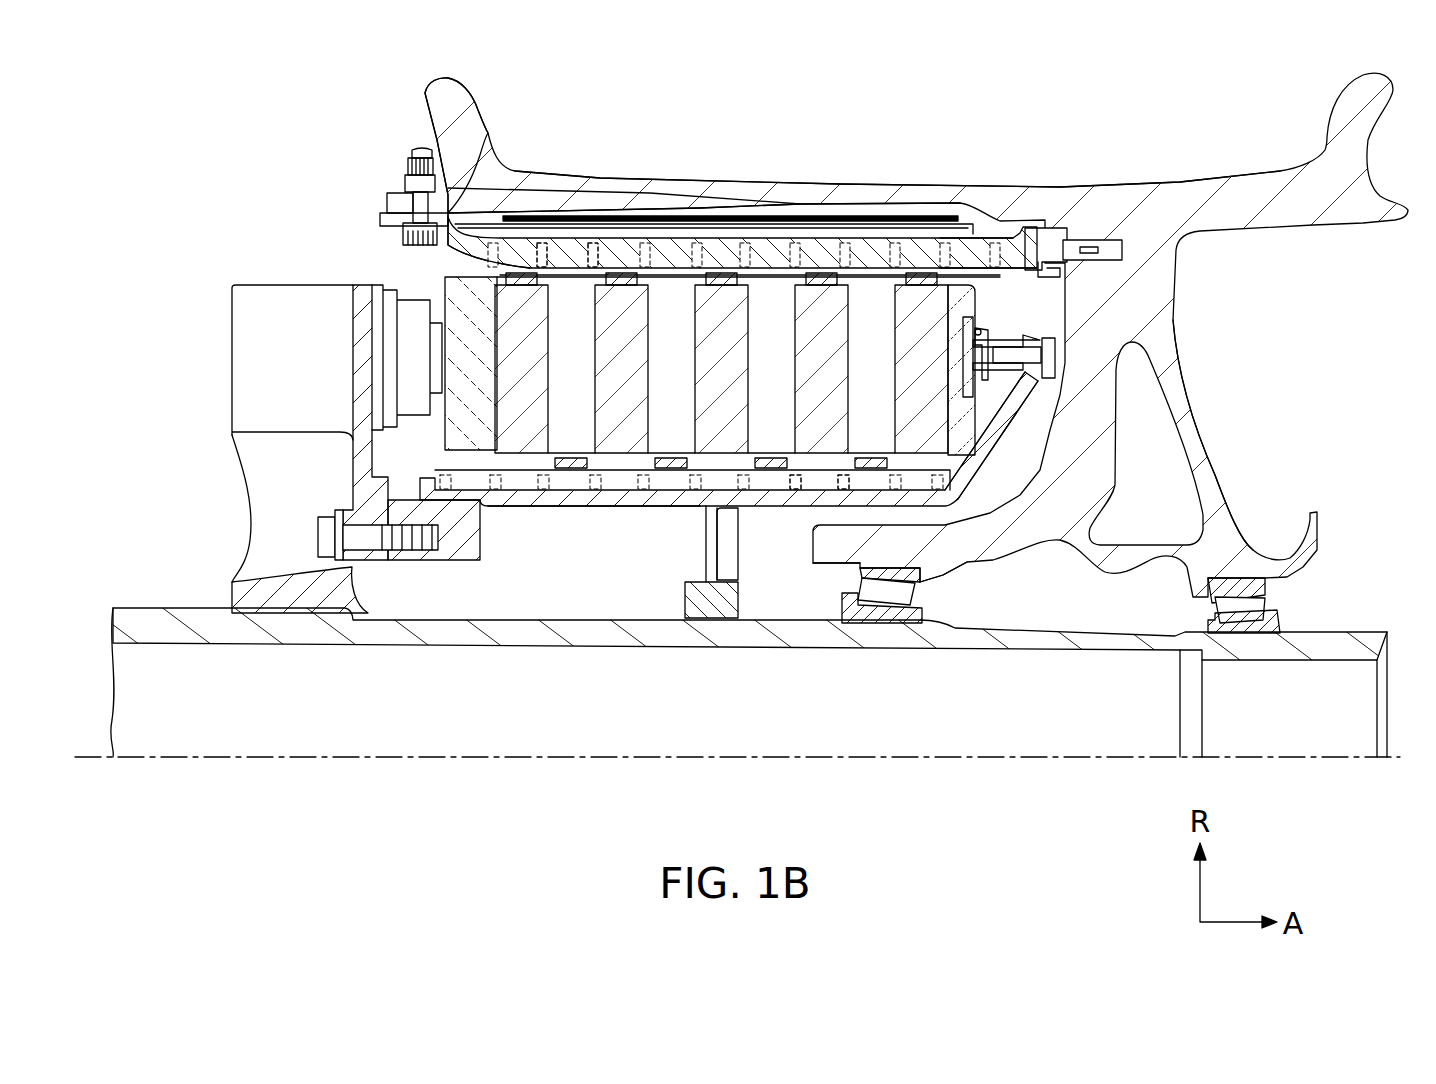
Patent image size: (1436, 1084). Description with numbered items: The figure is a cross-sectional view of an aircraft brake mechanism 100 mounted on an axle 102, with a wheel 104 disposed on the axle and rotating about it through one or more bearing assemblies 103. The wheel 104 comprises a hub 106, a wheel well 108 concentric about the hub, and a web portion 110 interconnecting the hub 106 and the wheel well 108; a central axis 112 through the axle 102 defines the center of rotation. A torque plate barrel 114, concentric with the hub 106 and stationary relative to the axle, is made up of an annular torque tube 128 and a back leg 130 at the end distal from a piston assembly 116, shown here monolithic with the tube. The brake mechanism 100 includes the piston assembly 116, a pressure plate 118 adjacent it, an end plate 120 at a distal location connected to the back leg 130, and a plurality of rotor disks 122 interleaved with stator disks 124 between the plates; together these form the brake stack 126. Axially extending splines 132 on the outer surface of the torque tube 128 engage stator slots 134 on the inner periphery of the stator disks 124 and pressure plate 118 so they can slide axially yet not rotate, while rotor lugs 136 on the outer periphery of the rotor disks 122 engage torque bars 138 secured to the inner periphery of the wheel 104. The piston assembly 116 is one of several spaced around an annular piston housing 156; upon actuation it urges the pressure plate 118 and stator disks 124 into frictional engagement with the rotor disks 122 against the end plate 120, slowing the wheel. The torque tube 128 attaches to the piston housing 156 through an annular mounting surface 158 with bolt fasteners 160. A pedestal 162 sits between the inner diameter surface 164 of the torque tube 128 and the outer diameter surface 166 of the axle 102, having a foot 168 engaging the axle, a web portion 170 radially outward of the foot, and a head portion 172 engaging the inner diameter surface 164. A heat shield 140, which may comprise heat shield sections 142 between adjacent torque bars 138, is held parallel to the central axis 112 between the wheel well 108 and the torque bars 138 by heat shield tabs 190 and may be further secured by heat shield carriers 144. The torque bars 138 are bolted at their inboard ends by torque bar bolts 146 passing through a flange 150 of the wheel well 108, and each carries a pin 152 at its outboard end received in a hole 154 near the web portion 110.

The brake mechanism 100 is at (240, 152).
The axle 102 is at (1045, 650).
The bearing assemblies 103 is at (1275, 610).
The wheel 104 is at (1198, 348).
The hub 106 is at (900, 548).
The wheel well 108 is at (1065, 185).
The web portion 110 is at (1200, 432).
The central axis 112 is at (995, 760).
The torque plate barrel 114 is at (543, 514).
The piston assembly 116 is at (328, 269).
The pressure plate 118 is at (445, 278).
The end plate 120 is at (970, 295).
The rotor disks 122 is at (526, 290).
The stator disks 124 is at (668, 290).
The brake stack 126 is at (827, 298).
The torque tube 128 is at (503, 509).
The back leg 130 is at (991, 435).
The splines 132 is at (425, 478).
The stator slots 134 is at (840, 489).
The rotor lugs 136 is at (598, 255).
The torque bars 138 is at (986, 250).
The heat shield 140 is at (712, 215).
The heat shield sections 142 is at (822, 224).
The heat shield carriers 144 is at (480, 132).
The torque bar bolts 146 is at (420, 150).
The flange 150 is at (393, 195).
The pin 152 is at (1070, 236).
The hole 154 is at (1105, 240).
The annular piston housing 156 is at (232, 287).
The annular mounting surface 158 is at (435, 563).
The bolt fasteners 160 is at (318, 534).
The pedestal 162 is at (706, 544).
The inner diameter surface 164 is at (590, 509).
The outer diameter surface 166 is at (748, 618).
The foot 168 is at (745, 580).
The web portion 170 is at (690, 584).
The head portion 172 is at (705, 509).
The heat shield tabs 190 is at (1052, 277).